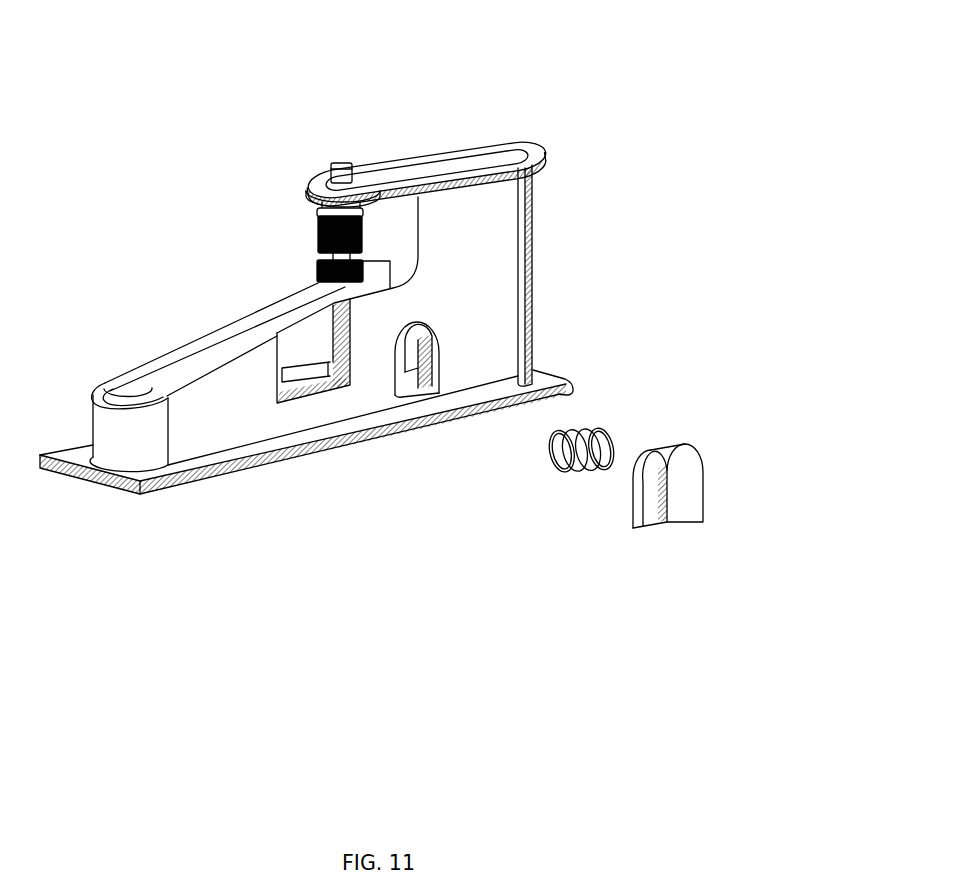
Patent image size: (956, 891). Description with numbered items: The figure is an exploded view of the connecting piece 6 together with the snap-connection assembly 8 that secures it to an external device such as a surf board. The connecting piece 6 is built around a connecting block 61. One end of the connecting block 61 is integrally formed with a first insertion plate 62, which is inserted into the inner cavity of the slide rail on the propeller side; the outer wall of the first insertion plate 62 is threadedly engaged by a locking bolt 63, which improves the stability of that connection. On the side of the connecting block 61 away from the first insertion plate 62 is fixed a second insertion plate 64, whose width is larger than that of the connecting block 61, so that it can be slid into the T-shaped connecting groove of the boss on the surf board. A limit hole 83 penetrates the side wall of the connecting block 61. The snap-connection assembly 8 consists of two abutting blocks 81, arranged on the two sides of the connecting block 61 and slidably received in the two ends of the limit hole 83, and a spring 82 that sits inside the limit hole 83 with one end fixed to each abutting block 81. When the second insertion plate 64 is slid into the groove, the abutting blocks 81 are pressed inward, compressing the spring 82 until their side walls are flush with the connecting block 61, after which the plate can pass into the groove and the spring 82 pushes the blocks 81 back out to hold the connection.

The connecting piece 6 is at (328, 303).
The connecting block 61 is at (206, 392).
The first insertion plate 62 is at (395, 162).
The locking bolt 63 is at (313, 182).
The second insertion plate 64 is at (215, 470).
The snap-connection assembly 8 is at (617, 559).
The abutting block 81 is at (678, 503).
The spring 82 is at (560, 475).
The limit hole 83 is at (396, 397).